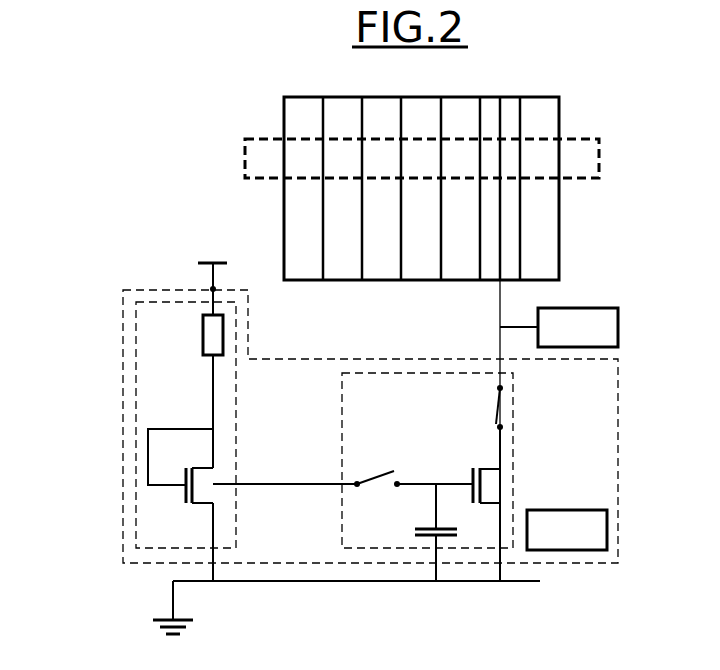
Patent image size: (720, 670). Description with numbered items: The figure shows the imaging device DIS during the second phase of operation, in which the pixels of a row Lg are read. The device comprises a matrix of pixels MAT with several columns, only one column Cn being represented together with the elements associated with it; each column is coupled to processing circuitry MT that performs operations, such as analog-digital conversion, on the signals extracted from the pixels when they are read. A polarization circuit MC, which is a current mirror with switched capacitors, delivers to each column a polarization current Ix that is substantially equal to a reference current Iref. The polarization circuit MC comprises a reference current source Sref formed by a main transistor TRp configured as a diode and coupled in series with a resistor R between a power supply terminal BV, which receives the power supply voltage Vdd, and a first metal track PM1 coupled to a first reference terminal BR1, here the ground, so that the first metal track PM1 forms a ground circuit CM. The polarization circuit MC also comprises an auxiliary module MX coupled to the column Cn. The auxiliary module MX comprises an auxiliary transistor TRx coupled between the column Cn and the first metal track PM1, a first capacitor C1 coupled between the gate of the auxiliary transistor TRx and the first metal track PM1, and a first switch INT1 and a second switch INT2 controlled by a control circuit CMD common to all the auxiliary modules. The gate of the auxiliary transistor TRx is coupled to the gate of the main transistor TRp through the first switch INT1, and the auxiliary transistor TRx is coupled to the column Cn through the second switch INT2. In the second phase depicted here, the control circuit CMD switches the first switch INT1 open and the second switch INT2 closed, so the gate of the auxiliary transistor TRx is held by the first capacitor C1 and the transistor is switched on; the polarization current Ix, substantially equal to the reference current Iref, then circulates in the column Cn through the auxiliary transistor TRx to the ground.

The imaging device DIS is at (143, 172).
The matrix of pixels MAT is at (560, 110).
The column Cn is at (500, 110).
The row Lg is at (610, 158).
The pixel Px is at (510, 165).
The processing circuitry MT is at (559, 327).
The polarization current Ix is at (500, 338).
The ground circuit CM is at (97, 572).
The reference current source Sref is at (238, 440).
The polarization circuit MC is at (618, 425).
The power supply voltage Vdd is at (217, 275).
The power supply terminal BV is at (210, 288).
The resistor R is at (202, 336).
The reference current Iref is at (213, 383).
The main transistor TRp is at (218, 503).
The first switch INT1 is at (382, 470).
The auxiliary transistor TRx is at (486, 465).
The auxiliary module MX is at (513, 462).
The second switch INT2 is at (496, 401).
The first capacitor C1 is at (428, 528).
The control circuit CMD is at (567, 530).
The first metal track PM1 is at (536, 585).
The first reference terminal BR1 is at (157, 625).